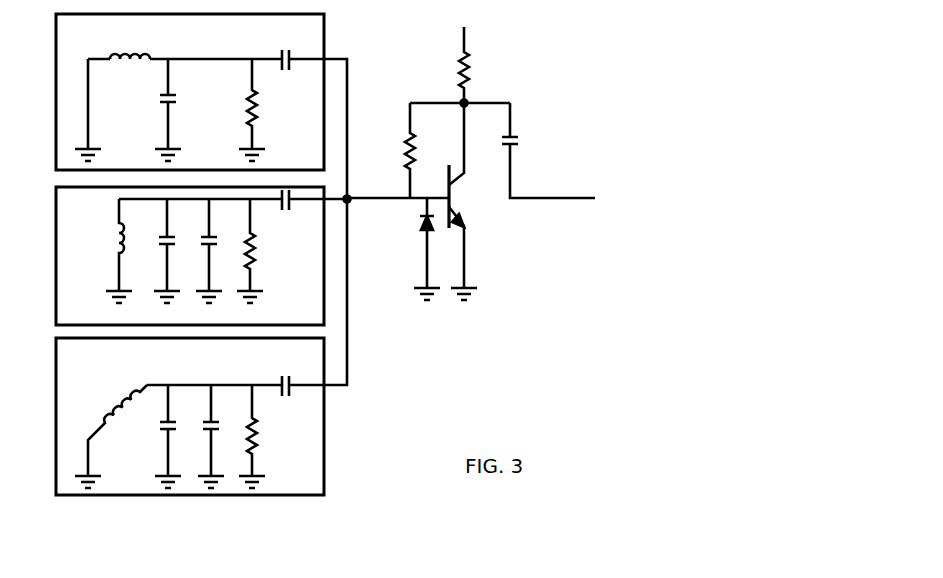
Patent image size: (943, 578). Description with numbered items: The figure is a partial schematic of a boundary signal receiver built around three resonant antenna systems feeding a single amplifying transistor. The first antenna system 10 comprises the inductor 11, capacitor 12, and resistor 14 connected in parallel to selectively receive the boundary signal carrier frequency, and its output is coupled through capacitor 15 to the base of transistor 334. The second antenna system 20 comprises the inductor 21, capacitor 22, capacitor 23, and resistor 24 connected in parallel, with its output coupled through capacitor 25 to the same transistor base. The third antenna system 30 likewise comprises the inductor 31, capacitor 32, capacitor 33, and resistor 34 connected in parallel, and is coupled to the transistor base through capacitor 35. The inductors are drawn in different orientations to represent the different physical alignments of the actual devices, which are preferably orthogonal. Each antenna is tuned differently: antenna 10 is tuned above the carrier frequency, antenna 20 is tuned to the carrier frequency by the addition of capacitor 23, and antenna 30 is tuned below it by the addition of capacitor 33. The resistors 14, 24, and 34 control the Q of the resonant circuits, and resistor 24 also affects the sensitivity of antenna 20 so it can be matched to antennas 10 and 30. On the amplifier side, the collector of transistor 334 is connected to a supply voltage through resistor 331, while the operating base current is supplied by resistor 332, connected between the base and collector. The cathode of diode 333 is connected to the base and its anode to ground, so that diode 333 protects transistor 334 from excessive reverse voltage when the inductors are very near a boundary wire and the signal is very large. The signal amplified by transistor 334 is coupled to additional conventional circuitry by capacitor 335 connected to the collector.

The first antenna system 10 is at (33, 58).
The inductor 11 is at (130, 62).
The capacitor 12 is at (173, 100).
The resistor 14 is at (258, 102).
The capacitor 15 is at (287, 72).
The second antenna system 20 is at (33, 239).
The inductor 21 is at (108, 240).
The capacitor 22 is at (165, 244).
The capacitor 23 is at (208, 244).
The resistor 24 is at (263, 252).
The capacitor 25 is at (287, 212).
The third antenna system 30 is at (33, 419).
The inductor 31 is at (122, 412).
The capacitor 32 is at (166, 427).
The capacitor 33 is at (208, 427).
The resistor 34 is at (262, 432).
The capacitor 35 is at (287, 395).
The resistor 331 is at (470, 70).
The resistor 332 is at (422, 152).
The diode 333 is at (416, 224).
The transistor 334 is at (458, 198).
The capacitor 335 is at (525, 138).